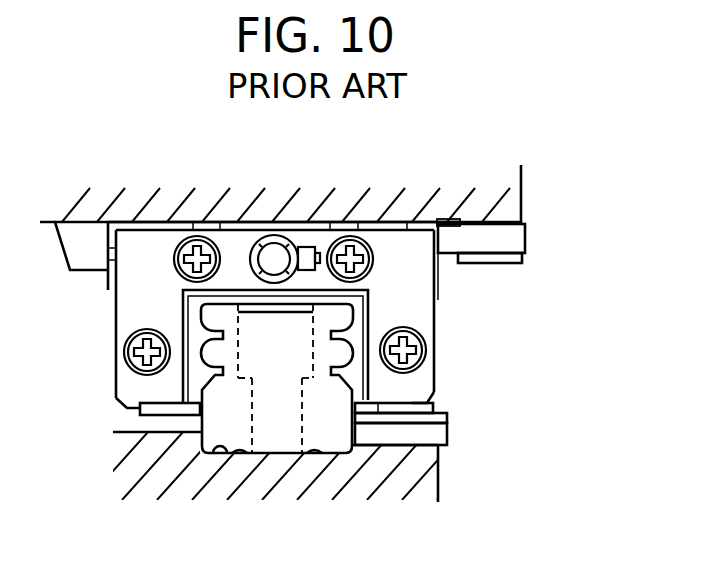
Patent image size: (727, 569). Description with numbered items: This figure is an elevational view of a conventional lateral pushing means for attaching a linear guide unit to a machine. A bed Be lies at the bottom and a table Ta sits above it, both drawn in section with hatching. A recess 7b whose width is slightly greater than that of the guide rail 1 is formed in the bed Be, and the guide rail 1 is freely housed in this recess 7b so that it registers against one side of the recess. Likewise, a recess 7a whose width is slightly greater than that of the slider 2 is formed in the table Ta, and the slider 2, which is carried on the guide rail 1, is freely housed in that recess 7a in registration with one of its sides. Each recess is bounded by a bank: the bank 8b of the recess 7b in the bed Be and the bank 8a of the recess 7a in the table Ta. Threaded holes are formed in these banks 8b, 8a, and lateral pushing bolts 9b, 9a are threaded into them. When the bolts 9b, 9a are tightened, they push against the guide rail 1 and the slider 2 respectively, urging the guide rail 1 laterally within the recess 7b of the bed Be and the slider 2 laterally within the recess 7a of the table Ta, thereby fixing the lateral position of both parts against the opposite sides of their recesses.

The guide rail 1 is at (284, 427).
The slider 2 is at (423, 315).
The recess 7a is at (396, 229).
The recess 7b is at (227, 452).
The bank 8a is at (508, 262).
The bank 8b is at (430, 408).
The lateral pushing bolt 9a is at (520, 240).
The lateral pushing bolt 9b is at (440, 430).
The table Ta is at (268, 157).
The bed Be is at (192, 535).